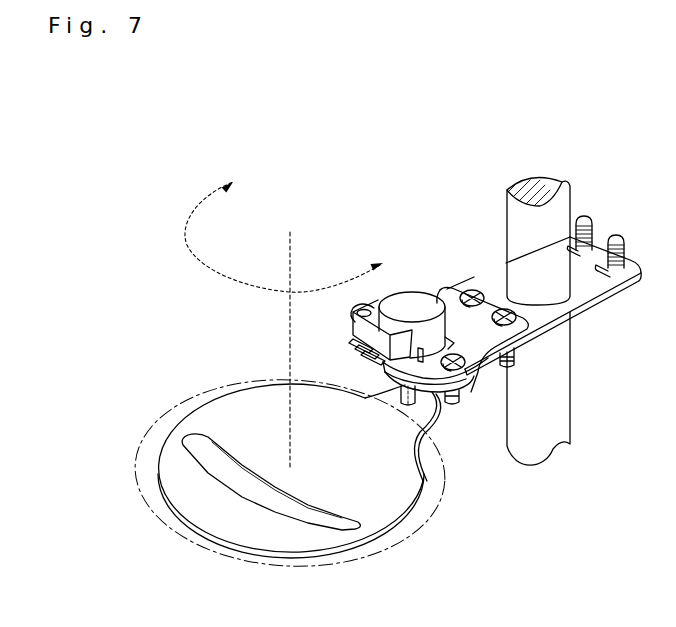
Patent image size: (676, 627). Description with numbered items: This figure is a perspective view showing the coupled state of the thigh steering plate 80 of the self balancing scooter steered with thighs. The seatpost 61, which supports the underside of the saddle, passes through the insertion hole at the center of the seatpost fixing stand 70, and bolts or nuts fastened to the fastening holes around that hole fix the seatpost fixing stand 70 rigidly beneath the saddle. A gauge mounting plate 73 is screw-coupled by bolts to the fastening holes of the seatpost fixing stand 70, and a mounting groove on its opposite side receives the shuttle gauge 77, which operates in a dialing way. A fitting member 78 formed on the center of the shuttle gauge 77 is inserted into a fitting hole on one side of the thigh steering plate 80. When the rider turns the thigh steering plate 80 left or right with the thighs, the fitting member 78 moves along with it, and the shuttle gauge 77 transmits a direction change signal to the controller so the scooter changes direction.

The seatpost 61 is at (526, 179).
The seatpost fixing stand 70 is at (607, 301).
The gauge mounting plate 73 is at (457, 287).
The shuttle gauge 77 is at (412, 297).
The fitting member 78 is at (421, 398).
The thigh steering plate 80 is at (242, 549).